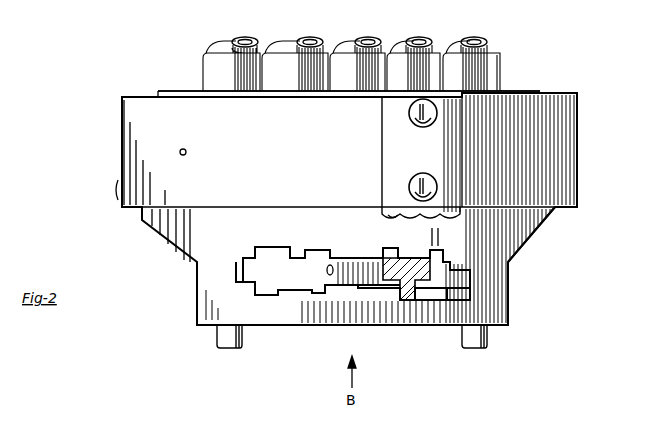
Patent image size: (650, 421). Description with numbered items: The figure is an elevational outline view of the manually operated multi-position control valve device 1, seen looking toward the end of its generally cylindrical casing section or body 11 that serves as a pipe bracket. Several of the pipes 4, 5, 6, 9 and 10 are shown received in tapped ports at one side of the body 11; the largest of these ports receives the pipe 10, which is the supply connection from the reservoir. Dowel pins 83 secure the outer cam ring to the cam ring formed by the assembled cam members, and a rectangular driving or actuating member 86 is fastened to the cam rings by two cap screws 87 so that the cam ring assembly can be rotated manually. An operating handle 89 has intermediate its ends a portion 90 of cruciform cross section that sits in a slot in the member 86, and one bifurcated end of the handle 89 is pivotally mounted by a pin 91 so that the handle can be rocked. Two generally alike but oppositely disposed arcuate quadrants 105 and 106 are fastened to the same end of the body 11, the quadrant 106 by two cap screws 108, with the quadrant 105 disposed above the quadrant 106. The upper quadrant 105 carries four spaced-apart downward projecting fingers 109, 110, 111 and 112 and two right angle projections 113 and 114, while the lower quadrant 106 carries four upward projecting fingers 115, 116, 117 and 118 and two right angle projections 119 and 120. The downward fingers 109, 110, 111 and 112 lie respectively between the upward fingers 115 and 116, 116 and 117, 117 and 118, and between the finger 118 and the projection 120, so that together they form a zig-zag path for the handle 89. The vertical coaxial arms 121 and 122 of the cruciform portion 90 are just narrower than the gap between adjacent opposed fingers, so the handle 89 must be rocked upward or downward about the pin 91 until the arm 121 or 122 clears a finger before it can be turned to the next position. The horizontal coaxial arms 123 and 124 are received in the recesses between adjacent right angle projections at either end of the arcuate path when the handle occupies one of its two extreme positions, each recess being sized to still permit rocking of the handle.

The control valve device 1 is at (577, 112).
The pipe 4 is at (419, 38).
The pipe 5 is at (309, 38).
The pipe 6 is at (245, 38).
The pipe 9 is at (450, 38).
The pipe 10 is at (366, 38).
The casing section or body 11 is at (492, 93).
The dowel pins 83 is at (187, 152).
The driving or actuating member 86 is at (388, 150).
The cap screws 87 is at (408, 112).
The operating handle 89 is at (370, 282).
The cruciform portion 90 is at (425, 295).
The pin 91 is at (326, 270).
The quadrant 105 is at (545, 222).
The quadrant 106 is at (510, 318).
The cap screws 108 is at (216, 343).
The downward projecting finger 109 is at (292, 255).
The downward projecting finger 110 is at (343, 256).
The downward projecting finger 111 is at (392, 255).
The downward projecting finger 112 is at (444, 233).
The right angle projection 113 is at (250, 252).
The right angle projection 114 is at (452, 262).
The upward projecting finger 115 is at (275, 298).
The upward projecting finger 116 is at (330, 296).
The upward projecting finger 117 is at (366, 300).
The upward projecting finger 118 is at (410, 300).
The right angle projection 119 is at (248, 287).
The right angle projection 120 is at (450, 288).
The vertical coaxial arm 121 is at (432, 222).
The vertical coaxial arm 122 is at (420, 302).
The horizontal coaxial arm 123 is at (398, 300).
The horizontal coaxial arm 124 is at (452, 271).